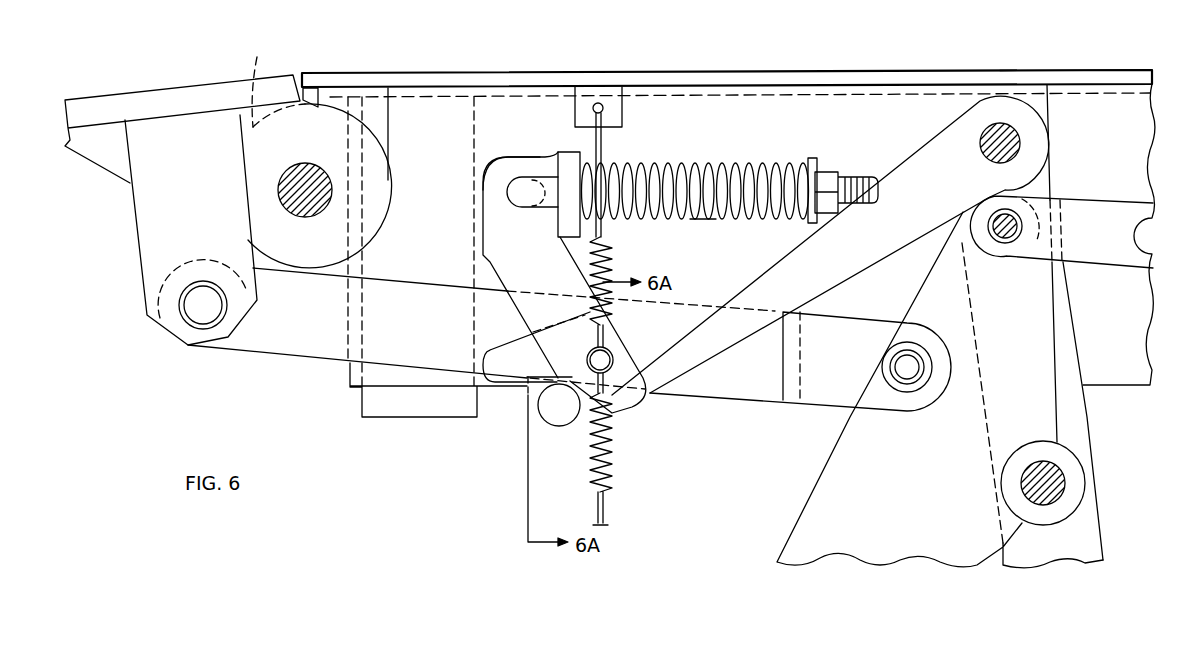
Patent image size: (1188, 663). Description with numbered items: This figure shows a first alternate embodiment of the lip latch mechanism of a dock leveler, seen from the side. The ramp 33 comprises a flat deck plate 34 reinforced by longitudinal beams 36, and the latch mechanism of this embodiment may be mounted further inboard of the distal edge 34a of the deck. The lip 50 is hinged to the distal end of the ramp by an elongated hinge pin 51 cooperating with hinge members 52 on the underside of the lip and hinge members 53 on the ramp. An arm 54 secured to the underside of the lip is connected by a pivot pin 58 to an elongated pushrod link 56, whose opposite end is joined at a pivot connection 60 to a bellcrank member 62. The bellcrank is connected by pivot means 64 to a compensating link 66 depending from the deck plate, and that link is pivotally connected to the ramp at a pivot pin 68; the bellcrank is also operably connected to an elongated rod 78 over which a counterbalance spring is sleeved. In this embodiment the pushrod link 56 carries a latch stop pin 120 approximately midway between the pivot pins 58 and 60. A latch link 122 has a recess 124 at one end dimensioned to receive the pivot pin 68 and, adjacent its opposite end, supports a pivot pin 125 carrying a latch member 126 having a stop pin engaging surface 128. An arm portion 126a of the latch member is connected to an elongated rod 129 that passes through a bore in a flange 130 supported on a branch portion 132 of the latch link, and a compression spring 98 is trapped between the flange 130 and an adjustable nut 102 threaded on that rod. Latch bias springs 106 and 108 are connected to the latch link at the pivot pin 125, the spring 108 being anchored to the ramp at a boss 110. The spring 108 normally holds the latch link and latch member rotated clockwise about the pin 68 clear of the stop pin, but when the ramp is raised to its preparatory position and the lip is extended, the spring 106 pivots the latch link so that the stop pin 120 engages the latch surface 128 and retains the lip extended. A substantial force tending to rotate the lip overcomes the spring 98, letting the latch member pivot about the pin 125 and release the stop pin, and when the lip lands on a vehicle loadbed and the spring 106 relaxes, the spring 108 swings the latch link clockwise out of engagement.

The dock leveler ramp 33 is at (744, 72).
The deck plate 34 is at (1037, 69).
The distal edge of deck 34a is at (300, 71).
The longitudinal beams 36 is at (1108, 388).
The lip 50 is at (173, 88).
The hinge pin 51 is at (323, 201).
The hinge members 52 is at (380, 142).
The hinge members 53 is at (256, 57).
The arm 54 is at (134, 229).
The pushrod link 56 is at (298, 358).
The pivot pin 58 is at (200, 312).
The pivot connection 60 is at (900, 388).
The bellcrank member 62 is at (782, 548).
The pivot means 64 is at (1045, 487).
The compensating link 66 is at (1093, 447).
The pivot pin 68 is at (1043, 160).
The elongated rod 78 is at (1092, 268).
The compression spring 98 is at (700, 222).
The adjustable nut 102 is at (826, 216).
The latch bias spring 106 is at (612, 485).
The latch bias spring 108 is at (606, 244).
The boss 110 is at (624, 100).
The latch stop pin 120 is at (553, 426).
The latch link 122 is at (697, 372).
The recess 124 is at (982, 153).
The pivot pin 125 is at (606, 357).
The latch member 126 is at (533, 305).
The arm portion 126a is at (500, 166).
The stop pin engaging surface 128 is at (558, 405).
The elongated rod 129 is at (548, 210).
The flange 130 is at (566, 151).
The branch portion 132 is at (612, 162).